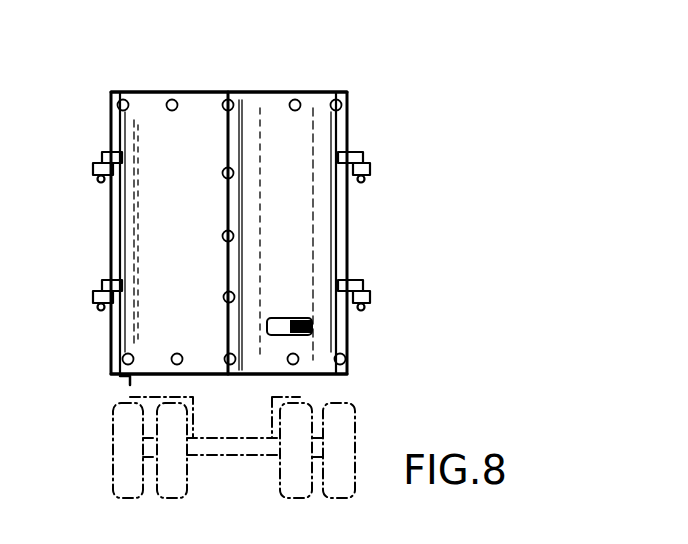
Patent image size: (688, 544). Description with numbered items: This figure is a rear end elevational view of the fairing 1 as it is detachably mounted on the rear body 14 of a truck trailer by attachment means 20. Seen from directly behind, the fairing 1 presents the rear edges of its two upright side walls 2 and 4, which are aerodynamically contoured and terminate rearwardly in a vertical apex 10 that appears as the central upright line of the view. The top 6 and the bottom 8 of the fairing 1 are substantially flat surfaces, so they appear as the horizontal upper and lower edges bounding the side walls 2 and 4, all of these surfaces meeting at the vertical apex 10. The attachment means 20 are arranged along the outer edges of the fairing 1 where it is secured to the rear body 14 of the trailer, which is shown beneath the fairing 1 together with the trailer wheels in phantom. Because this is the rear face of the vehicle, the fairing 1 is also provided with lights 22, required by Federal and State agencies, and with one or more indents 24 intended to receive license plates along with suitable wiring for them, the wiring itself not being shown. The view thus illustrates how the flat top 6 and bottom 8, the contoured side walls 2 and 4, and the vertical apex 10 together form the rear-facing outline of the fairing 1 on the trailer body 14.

The fairing 1 is at (390, 119).
The side wall 2 is at (112, 223).
The side wall 4 is at (327, 229).
The top 6 is at (257, 92).
The bottom 8 is at (292, 378).
The vertical apex 10 is at (225, 144).
The rear body 14 is at (127, 385).
The attachment means 20 is at (102, 152).
The lights 22 is at (228, 104).
The indent 24 is at (312, 327).